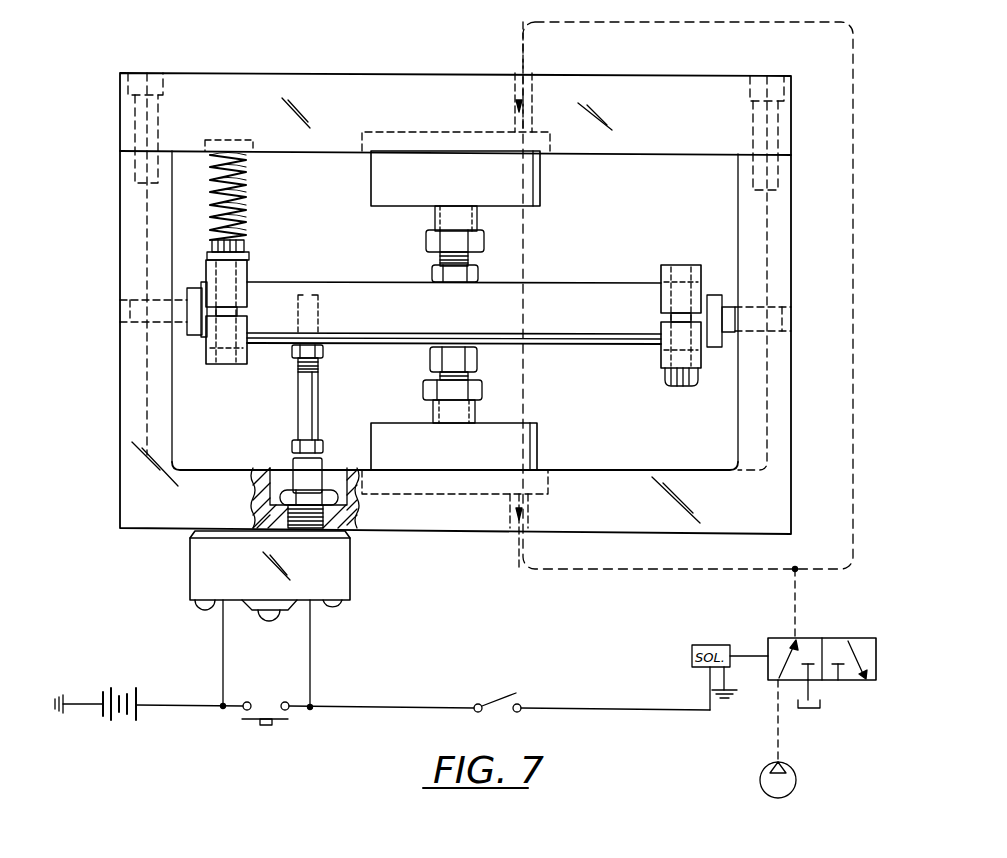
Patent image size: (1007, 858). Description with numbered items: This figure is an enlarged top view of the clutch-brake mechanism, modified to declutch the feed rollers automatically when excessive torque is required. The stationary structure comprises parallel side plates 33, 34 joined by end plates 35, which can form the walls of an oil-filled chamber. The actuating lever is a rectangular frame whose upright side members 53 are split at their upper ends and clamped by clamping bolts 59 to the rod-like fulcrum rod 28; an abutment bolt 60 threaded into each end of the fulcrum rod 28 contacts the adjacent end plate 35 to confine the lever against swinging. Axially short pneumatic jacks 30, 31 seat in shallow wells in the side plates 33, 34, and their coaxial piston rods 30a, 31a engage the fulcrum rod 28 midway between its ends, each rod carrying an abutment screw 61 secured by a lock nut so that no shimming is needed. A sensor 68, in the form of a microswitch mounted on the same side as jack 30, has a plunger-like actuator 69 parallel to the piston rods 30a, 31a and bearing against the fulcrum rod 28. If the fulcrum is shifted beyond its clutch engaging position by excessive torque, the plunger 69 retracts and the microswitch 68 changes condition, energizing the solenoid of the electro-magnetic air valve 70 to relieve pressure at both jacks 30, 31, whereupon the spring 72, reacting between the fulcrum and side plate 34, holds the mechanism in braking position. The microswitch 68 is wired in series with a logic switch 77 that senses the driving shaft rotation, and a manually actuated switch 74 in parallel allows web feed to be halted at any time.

The fulcrum rod 28 is at (585, 340).
The pneumatic jack 30 is at (537, 444).
The piston rod 30a is at (475, 408).
The pneumatic jack 31 is at (540, 192).
The piston rod 31a is at (477, 224).
The side plate 33 is at (663, 535).
The side plate 34 is at (687, 157).
The end plates 35 is at (120, 384).
The side members 53 is at (247, 363).
The clamping bolt 59 is at (248, 238).
The abutment bolt 60 is at (183, 292).
The abutment screw 61 is at (477, 270).
The sensor 68 is at (343, 578).
The plunger-like actuator 69 is at (313, 482).
The electro-magnetic air valve 70 is at (894, 603).
The spring 72 is at (247, 177).
The manually actuated switch 74 is at (297, 715).
The logic switch 77 is at (520, 693).